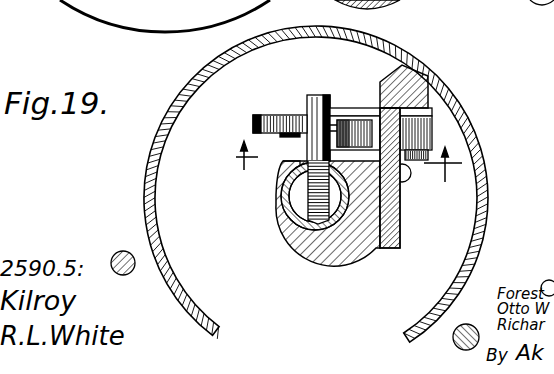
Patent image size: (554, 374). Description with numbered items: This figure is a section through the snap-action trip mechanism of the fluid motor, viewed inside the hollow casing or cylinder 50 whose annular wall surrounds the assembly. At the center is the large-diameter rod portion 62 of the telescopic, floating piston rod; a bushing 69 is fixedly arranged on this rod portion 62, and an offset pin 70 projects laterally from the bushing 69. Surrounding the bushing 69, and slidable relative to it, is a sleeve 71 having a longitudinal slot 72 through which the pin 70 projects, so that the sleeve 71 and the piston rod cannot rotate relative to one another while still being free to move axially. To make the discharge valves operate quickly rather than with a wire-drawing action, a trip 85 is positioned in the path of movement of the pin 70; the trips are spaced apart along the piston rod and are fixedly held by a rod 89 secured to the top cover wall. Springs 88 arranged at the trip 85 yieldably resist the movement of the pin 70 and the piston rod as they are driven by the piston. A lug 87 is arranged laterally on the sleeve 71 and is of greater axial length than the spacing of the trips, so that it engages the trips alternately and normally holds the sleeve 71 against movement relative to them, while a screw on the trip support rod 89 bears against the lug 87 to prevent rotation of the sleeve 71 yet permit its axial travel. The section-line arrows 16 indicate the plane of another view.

The section line 16- 16 is at (343, 161).
The casing 50 is at (478, 121).
The rod portion 62 is at (285, 207).
The bushing 69 is at (283, 191).
The offset pin 70 is at (309, 98).
The sleeve 71 is at (357, 236).
The longitudinal slot 72 is at (286, 163).
The trip 85 is at (272, 116).
The lug 87 is at (397, 234).
The springs 88 is at (362, 117).
The rod 89 is at (429, 73).